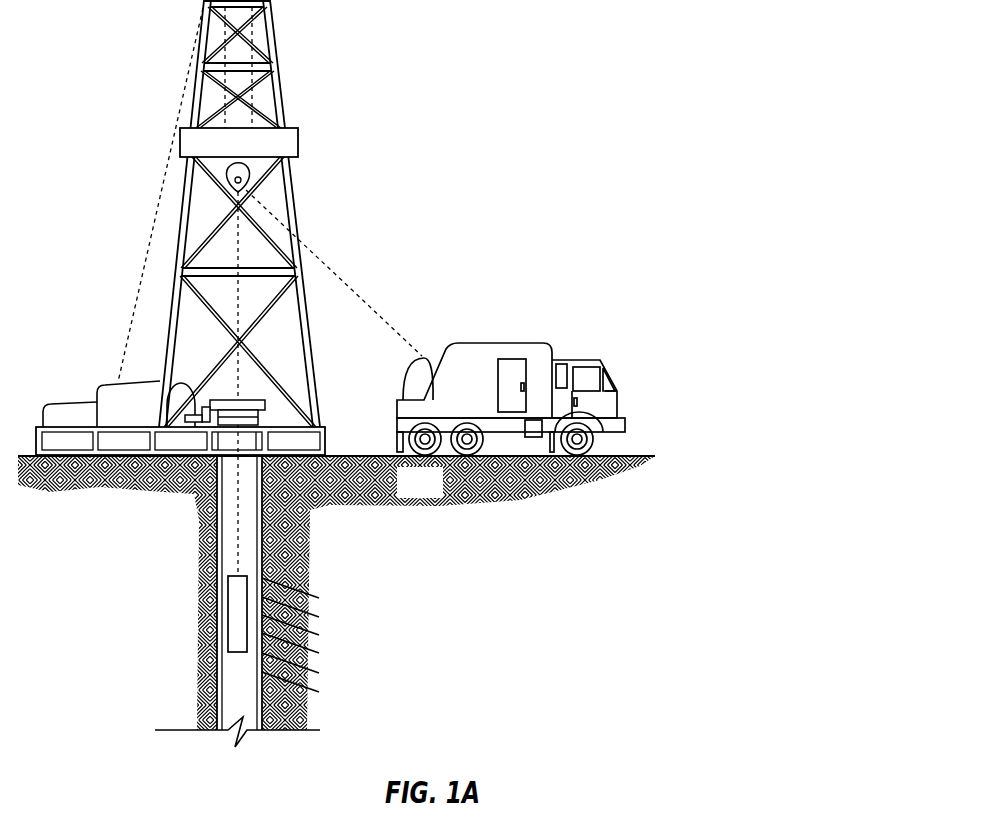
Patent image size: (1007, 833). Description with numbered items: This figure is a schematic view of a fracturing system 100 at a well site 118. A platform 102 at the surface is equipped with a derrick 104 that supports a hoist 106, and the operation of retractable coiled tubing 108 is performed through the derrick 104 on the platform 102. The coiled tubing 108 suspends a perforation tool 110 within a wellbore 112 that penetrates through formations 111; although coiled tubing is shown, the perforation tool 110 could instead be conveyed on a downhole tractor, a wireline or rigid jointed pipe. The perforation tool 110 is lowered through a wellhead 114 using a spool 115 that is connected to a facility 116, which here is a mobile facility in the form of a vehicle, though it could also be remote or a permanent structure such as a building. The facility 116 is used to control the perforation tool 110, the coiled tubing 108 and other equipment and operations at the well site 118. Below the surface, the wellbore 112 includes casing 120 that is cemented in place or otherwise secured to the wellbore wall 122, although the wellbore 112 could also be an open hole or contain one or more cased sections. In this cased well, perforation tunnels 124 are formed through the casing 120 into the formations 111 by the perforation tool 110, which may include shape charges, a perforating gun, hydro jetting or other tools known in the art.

The fracturing system 100 is at (612, 69).
The platform 102 is at (327, 438).
The derrick 104 is at (307, 357).
The hoist 106 is at (241, 178).
The retractable coiled tubing 108 is at (333, 268).
The perforation tool 110 is at (235, 600).
The formations 111 is at (441, 494).
The wellbore 112 is at (232, 677).
The wellhead 114 is at (262, 407).
The spool 115 is at (424, 366).
The facility 116 is at (503, 326).
The well site 118 is at (499, 214).
The casing 120 is at (220, 541).
The wellbore wall 122 is at (218, 620).
The perforation tunnels 124 is at (323, 592).